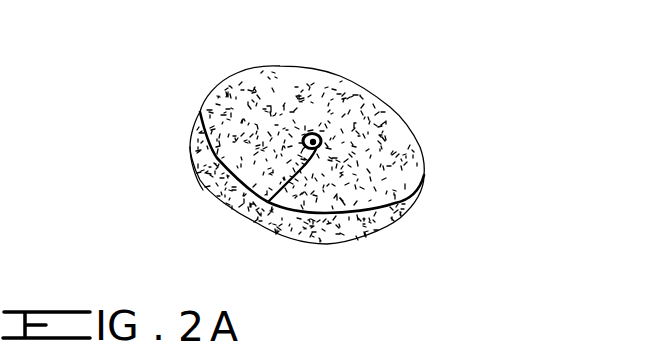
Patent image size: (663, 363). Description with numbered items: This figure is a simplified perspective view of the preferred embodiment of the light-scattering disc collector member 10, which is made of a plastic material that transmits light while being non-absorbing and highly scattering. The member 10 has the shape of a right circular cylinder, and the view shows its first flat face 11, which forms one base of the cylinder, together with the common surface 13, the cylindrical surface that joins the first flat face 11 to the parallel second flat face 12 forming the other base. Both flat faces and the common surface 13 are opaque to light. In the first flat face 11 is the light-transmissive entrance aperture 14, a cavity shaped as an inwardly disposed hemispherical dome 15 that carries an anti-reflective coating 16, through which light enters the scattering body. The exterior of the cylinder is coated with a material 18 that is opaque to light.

The light-scattering disc collector member 10 is at (448, 92).
The first flat face 11 is at (241, 84).
The second flat face 12 is at (197, 187).
The common surface 13 is at (393, 219).
The light-transmissive entrance aperture 14 is at (313, 134).
The hemispherical dome 15 is at (268, 202).
The anti-reflective coating 16 is at (318, 134).
The opaque coating material 18 is at (347, 197).